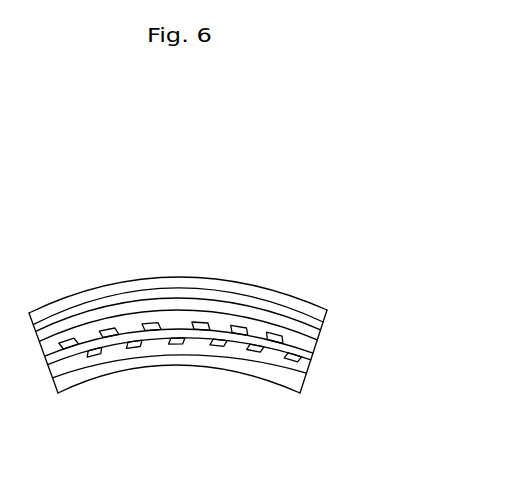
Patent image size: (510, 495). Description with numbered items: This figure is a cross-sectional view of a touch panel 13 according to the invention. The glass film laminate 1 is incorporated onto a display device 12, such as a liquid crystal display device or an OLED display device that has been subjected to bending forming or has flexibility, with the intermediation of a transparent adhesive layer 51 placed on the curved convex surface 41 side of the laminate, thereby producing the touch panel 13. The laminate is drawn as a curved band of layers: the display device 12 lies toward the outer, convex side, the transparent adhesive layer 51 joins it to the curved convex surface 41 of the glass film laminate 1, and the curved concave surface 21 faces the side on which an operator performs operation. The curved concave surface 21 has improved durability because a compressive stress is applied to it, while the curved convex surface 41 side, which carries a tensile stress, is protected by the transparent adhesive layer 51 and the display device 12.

The touch panel 13 is at (291, 243).
The display device 12 is at (310, 298).
The curved convex surface 41 is at (173, 299).
The transparent adhesive layer 51 is at (325, 322).
The glass film laminate 1 is at (199, 393).
The curved concave surface 21 is at (174, 366).